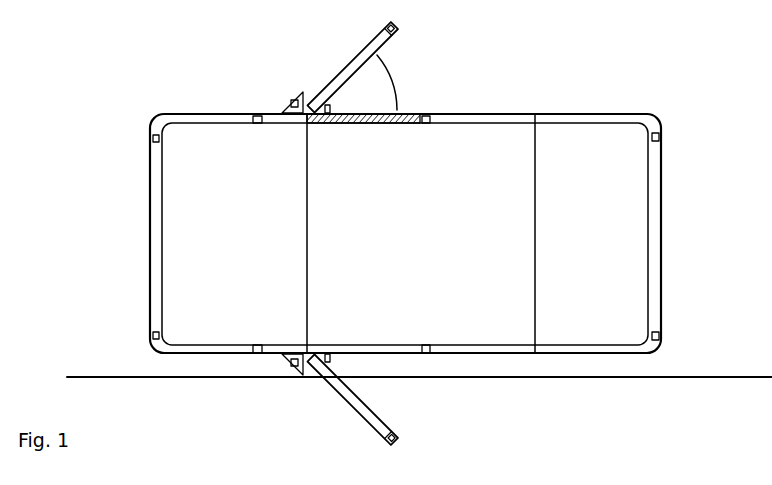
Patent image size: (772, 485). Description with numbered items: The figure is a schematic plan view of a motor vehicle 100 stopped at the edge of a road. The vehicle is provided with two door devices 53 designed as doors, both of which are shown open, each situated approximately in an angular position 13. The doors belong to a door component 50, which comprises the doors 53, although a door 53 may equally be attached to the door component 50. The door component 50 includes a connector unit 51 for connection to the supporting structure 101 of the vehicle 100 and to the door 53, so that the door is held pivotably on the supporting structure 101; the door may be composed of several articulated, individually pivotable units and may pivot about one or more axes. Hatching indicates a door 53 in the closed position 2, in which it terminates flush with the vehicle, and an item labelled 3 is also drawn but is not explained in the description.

The motor vehicle 100 is at (125, 97).
The closed position 2 is at (430, 130).
The table top 3 is at (500, 57).
The angular position 13 is at (400, 82).
The door component 50 is at (340, 142).
The connector unit 51 is at (317, 350).
The door device 53 is at (352, 63).
The supporting structure 101 is at (377, 355).